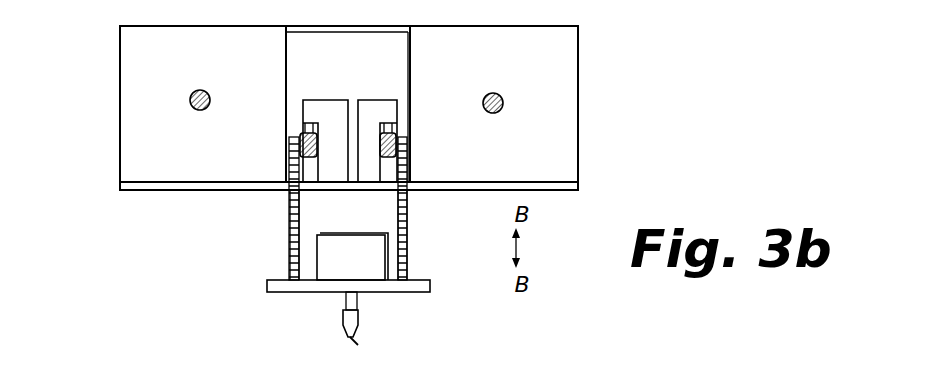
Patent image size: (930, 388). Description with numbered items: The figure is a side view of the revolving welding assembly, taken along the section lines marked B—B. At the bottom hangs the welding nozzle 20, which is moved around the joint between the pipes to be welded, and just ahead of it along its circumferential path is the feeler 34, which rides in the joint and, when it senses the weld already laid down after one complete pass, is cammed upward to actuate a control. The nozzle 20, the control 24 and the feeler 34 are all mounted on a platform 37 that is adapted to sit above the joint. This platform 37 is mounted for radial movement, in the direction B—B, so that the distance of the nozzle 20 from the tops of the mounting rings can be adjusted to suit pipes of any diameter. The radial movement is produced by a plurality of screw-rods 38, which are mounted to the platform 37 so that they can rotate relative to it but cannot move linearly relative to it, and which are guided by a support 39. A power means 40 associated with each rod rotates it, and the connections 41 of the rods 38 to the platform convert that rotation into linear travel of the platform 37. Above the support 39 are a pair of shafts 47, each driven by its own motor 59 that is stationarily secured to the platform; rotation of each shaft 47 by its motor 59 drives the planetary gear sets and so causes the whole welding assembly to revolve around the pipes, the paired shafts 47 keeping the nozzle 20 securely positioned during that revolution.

The nozzle 20 is at (360, 316).
The control 24 is at (365, 270).
The feeler 34 is at (352, 342).
The platform 37 is at (428, 292).
The screw-rods 38 is at (290, 258).
The support 39 is at (221, 189).
The power means 40 is at (298, 133).
The connections 41 is at (284, 196).
The shaft 47 is at (203, 90).
The motor 59 is at (143, 112).